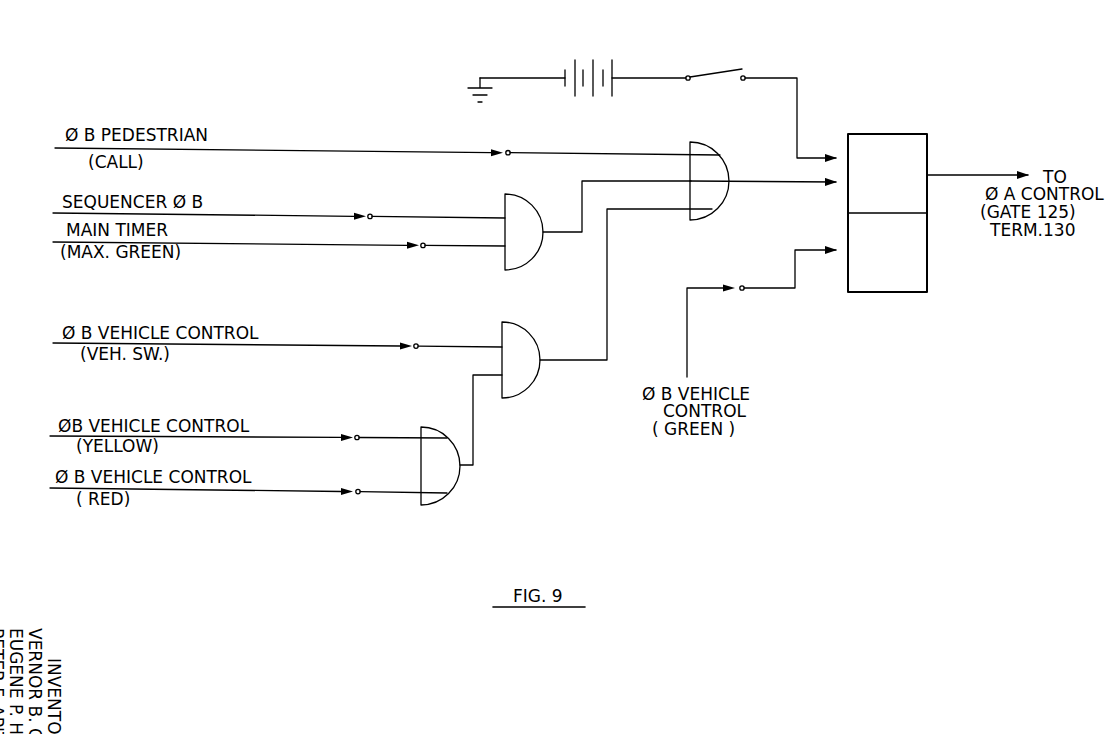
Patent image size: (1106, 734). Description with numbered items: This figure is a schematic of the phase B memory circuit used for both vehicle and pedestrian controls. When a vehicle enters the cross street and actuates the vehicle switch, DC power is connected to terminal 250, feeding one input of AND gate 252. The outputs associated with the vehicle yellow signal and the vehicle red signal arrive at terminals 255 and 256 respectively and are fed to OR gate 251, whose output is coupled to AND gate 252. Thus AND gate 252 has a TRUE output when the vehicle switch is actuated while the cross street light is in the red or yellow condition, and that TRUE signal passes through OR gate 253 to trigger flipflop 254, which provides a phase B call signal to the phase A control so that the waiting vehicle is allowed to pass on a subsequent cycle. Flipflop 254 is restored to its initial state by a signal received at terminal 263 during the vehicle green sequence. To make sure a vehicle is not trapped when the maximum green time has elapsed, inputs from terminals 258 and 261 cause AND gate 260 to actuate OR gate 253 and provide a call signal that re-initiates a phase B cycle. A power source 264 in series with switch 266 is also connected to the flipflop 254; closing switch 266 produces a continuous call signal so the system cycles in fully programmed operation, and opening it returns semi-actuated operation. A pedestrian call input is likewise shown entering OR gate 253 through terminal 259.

The terminal 250 is at (420, 343).
The OR gate 251 is at (453, 474).
The AND gate 252 is at (520, 337).
The OR gate 253 is at (722, 192).
The flipflop 254 is at (927, 160).
The terminal 255 is at (363, 436).
The terminal 256 is at (367, 494).
The terminal 258 is at (424, 247).
The phase B pedestrian call input line 259 is at (509, 151).
The AND gate 260 is at (525, 218).
The terminal 261 is at (371, 215).
The terminal 263 is at (745, 290).
The battery 264 is at (593, 67).
The switch 266 is at (718, 72).